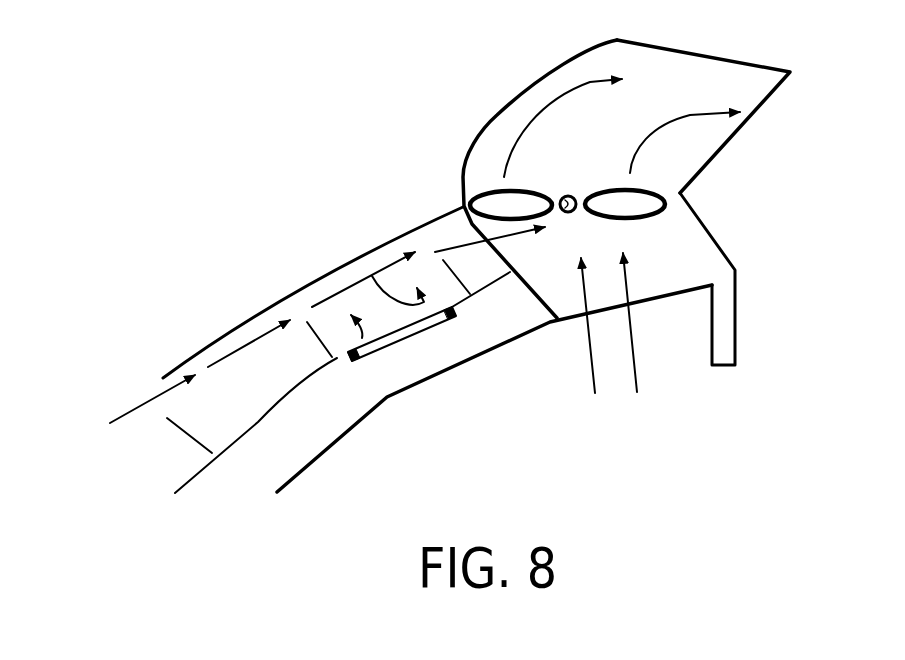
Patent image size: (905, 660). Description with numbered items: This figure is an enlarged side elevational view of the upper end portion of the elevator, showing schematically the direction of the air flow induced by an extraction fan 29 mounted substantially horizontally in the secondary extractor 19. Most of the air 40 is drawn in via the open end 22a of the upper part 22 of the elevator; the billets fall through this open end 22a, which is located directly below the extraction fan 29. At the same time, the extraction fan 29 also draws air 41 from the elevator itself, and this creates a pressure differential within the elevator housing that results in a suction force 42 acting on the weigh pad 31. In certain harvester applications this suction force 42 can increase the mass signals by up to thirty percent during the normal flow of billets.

The secondary extractor 19 is at (557, 67).
The upper part of the elevator 22 is at (243, 242).
The open end 22a is at (665, 303).
The extraction fan 29 is at (633, 187).
The weigh pad 31 is at (413, 328).
The air 40 is at (593, 350).
The air 41 is at (247, 345).
The suction force 42 is at (361, 336).